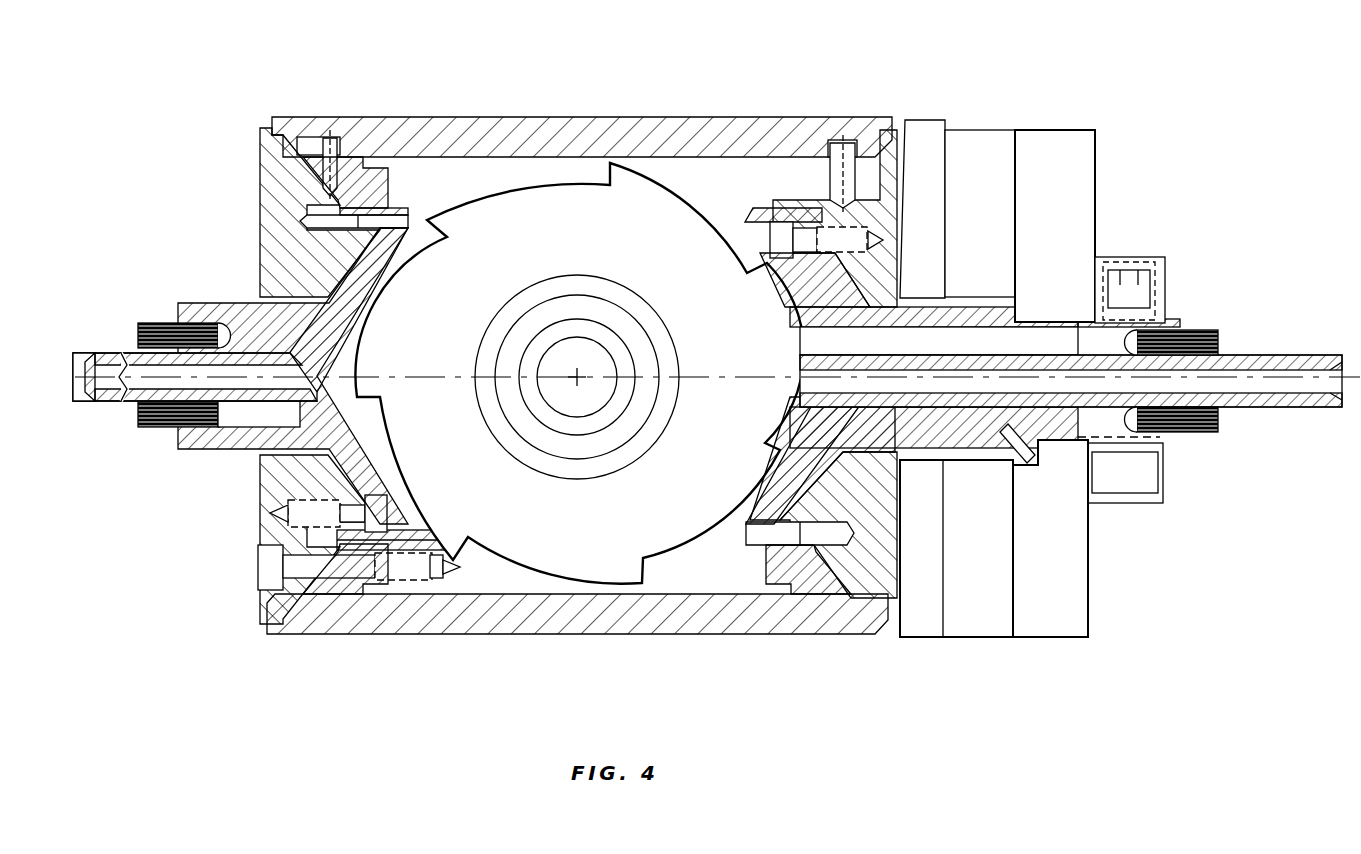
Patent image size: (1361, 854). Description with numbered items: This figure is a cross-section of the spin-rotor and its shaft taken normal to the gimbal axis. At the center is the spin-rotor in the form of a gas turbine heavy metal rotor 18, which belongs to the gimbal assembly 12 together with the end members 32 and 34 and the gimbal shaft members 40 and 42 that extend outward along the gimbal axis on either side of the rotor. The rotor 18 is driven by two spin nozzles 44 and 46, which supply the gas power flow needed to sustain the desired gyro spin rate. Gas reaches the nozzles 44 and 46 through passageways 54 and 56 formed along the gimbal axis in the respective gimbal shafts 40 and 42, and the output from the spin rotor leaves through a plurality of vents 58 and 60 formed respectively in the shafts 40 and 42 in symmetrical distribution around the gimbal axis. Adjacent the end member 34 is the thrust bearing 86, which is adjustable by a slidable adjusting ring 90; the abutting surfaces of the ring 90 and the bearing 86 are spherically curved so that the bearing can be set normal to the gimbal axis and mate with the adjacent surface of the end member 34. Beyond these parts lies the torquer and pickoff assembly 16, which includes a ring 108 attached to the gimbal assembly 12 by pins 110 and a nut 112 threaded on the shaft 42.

The gimbal assembly 12 is at (579, 327).
The torquer and pickoff assembly 16 is at (1047, 548).
The rotor 18 is at (644, 244).
The end member 32 is at (298, 207).
The end member 34 is at (893, 190).
The gimbal shaft member 40 is at (302, 334).
The gimbal shaft member 42 is at (828, 302).
The spin nozzle 44 is at (361, 310).
The spin nozzle 46 is at (795, 442).
The passageway 54 is at (252, 385).
The passageway 56 is at (1010, 392).
The vents 58 is at (291, 432).
The vents 60 is at (970, 349).
The thrust bearing 86 is at (938, 171).
The adjusting ring 90 is at (990, 226).
The ring 108 is at (1082, 494).
The pins 110 is at (1034, 476).
The nut 112 is at (1165, 395).